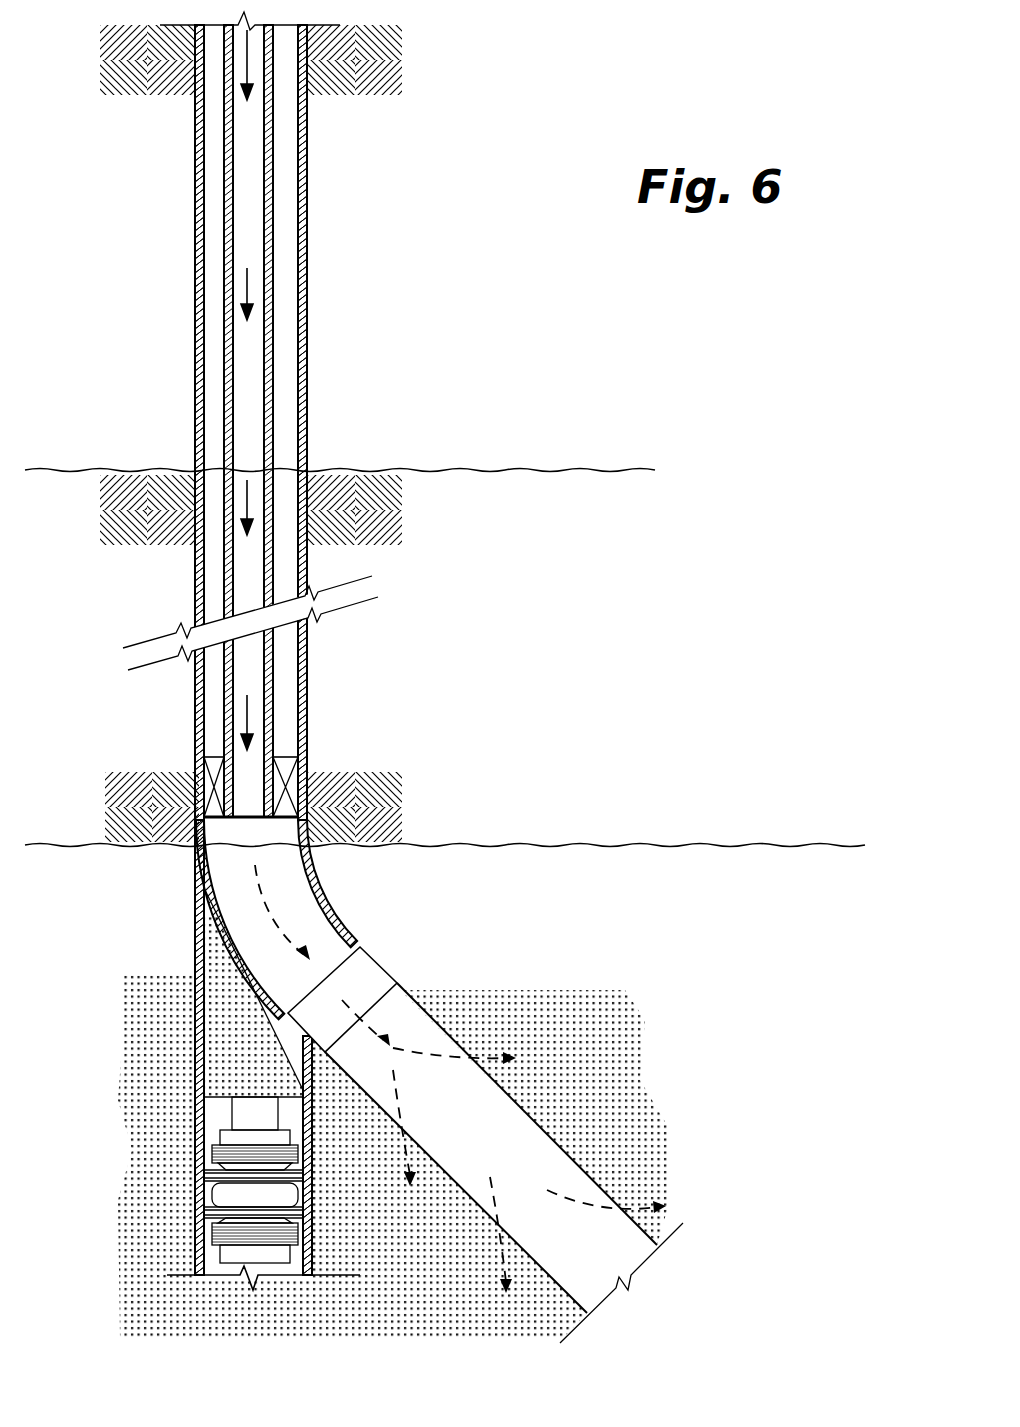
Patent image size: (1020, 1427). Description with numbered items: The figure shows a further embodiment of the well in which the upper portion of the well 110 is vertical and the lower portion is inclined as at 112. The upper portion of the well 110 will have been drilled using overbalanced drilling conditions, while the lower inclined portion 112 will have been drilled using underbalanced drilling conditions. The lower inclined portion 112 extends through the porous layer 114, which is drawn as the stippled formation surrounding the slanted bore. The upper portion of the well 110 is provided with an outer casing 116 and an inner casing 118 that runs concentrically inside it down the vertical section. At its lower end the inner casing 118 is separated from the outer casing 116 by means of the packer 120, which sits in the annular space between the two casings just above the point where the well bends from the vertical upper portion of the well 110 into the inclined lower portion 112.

The upper portion of the well 110 is at (307, 242).
The lower inclined portion of the well 112 is at (613, 1245).
The porous layer 114 is at (575, 1083).
The outer casing 116 is at (307, 375).
The inner casing 118 is at (224, 333).
The packer 120 is at (207, 757).